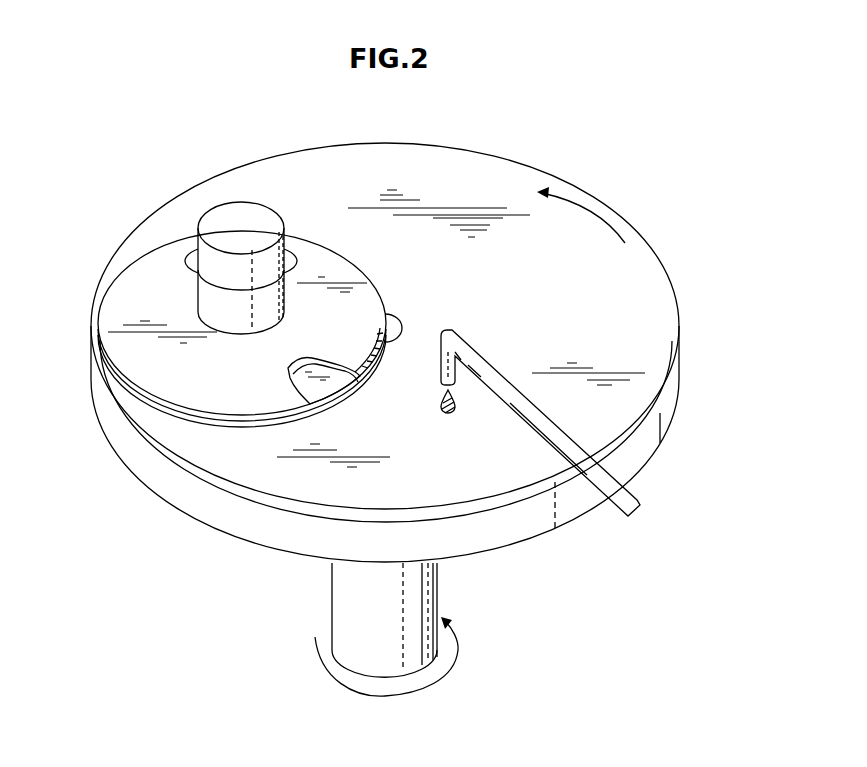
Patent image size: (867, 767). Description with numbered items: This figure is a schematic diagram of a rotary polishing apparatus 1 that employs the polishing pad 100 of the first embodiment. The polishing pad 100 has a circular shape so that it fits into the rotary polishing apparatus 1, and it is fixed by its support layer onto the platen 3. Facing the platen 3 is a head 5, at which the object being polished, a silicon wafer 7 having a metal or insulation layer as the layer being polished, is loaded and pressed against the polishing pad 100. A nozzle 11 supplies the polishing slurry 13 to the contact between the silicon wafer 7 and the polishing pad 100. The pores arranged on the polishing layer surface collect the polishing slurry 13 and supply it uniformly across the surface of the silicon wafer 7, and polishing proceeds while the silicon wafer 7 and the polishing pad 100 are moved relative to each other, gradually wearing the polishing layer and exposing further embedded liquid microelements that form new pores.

The polishing apparatus 1 is at (604, 132).
The platen 3 is at (230, 519).
The head 5 is at (225, 218).
The silicon wafer 7 is at (343, 379).
The nozzle 11 is at (478, 362).
The polishing slurry 13 is at (452, 415).
The polishing pad 100 is at (190, 470).